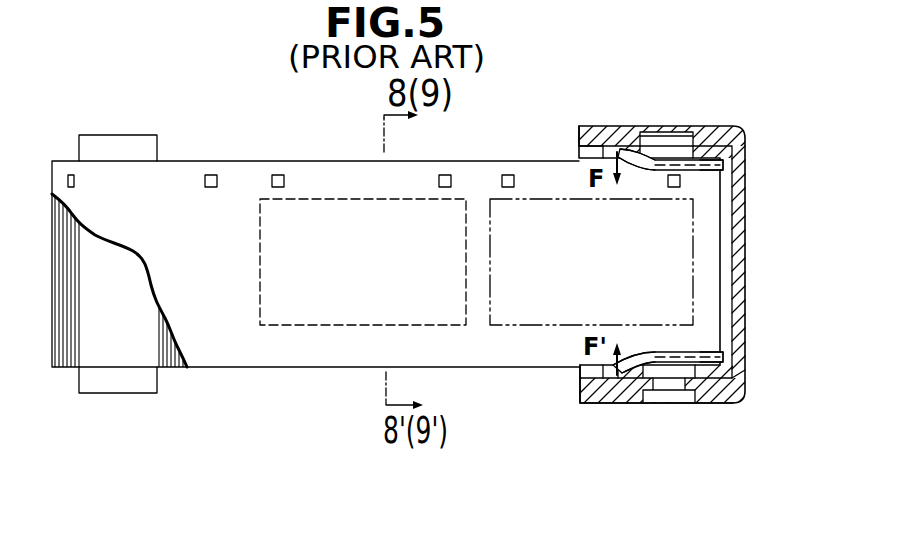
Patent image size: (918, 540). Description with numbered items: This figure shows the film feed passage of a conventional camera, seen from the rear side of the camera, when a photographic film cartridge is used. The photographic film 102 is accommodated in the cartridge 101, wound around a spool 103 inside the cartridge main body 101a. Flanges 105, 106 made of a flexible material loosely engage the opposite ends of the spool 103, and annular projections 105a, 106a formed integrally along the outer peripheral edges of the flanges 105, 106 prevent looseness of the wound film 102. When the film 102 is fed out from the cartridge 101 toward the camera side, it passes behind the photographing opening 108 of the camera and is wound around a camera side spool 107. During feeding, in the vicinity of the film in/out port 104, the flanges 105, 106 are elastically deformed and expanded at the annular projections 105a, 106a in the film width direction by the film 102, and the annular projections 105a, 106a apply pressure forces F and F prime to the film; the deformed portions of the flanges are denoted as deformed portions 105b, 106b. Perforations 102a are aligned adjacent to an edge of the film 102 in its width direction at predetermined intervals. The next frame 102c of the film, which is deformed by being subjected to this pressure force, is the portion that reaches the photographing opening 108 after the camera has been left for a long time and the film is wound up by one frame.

The cartridge 101 is at (588, 100).
The cartridge main body 101a is at (587, 127).
The photographic film 102 is at (452, 160).
The perforations 102a is at (278, 173).
The next frame 102c is at (514, 326).
The spool 103 is at (663, 140).
The film in/out port 104 is at (580, 372).
The flange 105 is at (704, 135).
The annular projection 105a is at (702, 178).
The deformed portion 105b is at (620, 149).
The flange 106 is at (708, 383).
The annular projection 106a is at (712, 332).
The deformed portion 106b is at (618, 372).
The camera side spool 107 is at (133, 133).
The photographing opening 108 is at (285, 326).